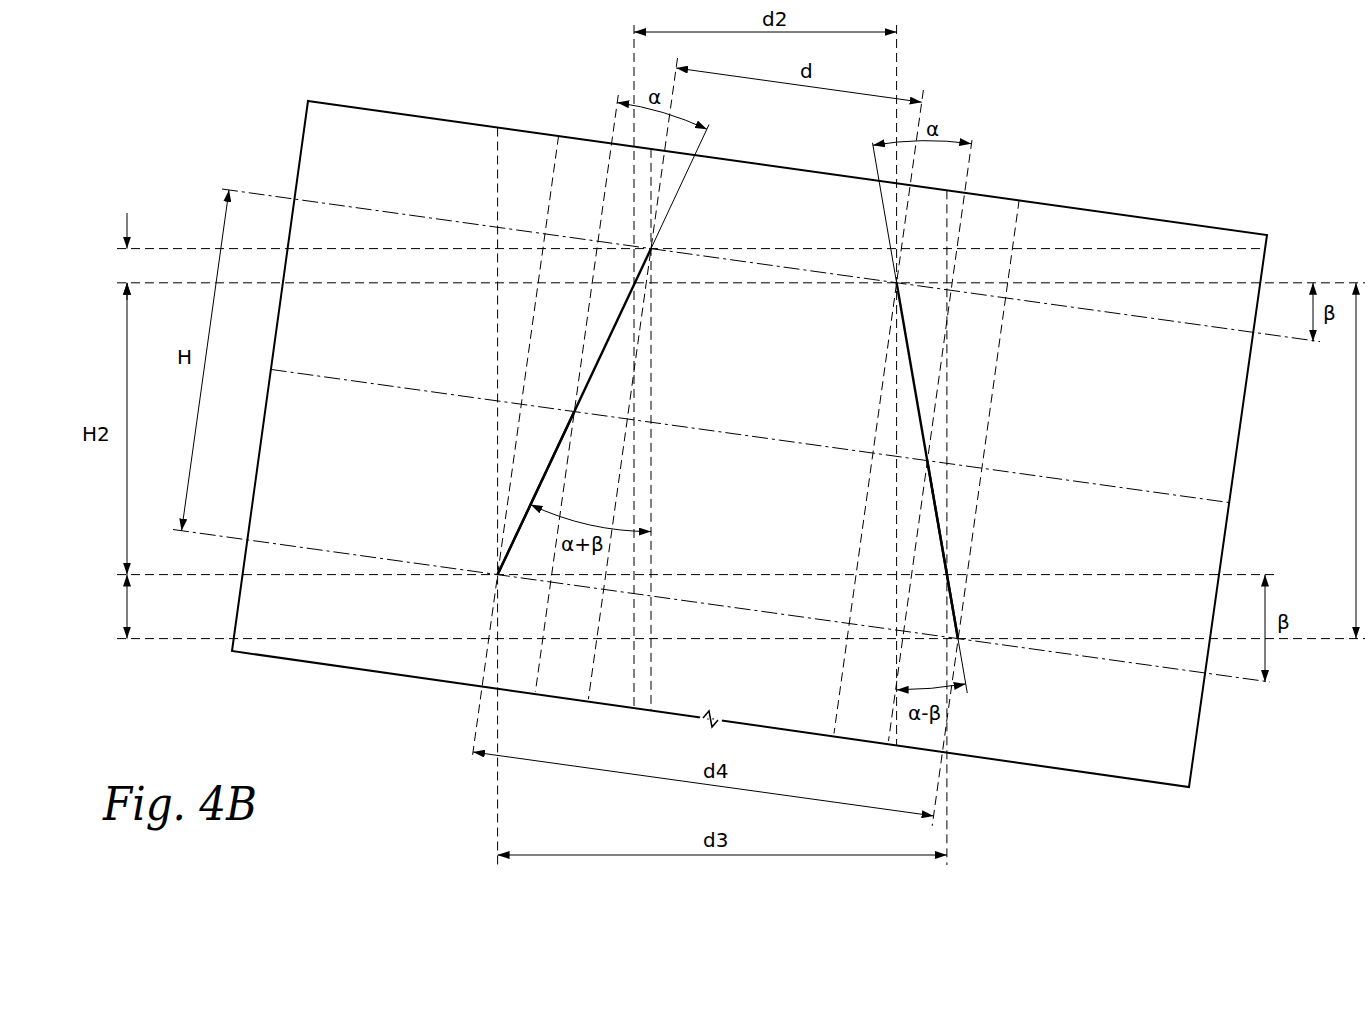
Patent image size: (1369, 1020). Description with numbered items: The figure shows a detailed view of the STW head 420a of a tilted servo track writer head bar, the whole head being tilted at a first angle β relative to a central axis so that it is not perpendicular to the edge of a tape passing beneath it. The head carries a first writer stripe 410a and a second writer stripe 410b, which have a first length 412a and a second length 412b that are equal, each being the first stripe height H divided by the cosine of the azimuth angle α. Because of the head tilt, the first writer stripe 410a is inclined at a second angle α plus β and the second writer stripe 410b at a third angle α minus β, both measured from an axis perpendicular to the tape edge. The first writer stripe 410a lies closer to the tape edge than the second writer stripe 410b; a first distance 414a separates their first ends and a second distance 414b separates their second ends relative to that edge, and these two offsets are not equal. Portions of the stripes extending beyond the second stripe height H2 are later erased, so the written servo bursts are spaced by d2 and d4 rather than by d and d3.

The STW head 420a is at (1081, 133).
The first length 412a is at (597, 358).
The second length 412b is at (912, 368).
The first writer stripe 410a is at (518, 522).
The second writer stripe 410b is at (935, 513).
The first distance 414a is at (127, 266).
The second distance 414b is at (127, 608).